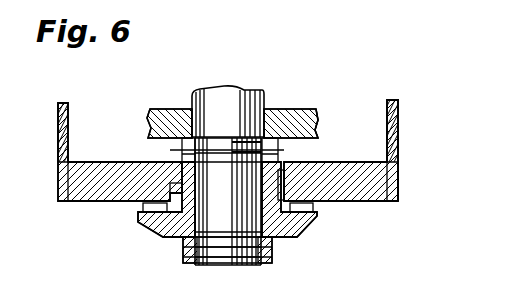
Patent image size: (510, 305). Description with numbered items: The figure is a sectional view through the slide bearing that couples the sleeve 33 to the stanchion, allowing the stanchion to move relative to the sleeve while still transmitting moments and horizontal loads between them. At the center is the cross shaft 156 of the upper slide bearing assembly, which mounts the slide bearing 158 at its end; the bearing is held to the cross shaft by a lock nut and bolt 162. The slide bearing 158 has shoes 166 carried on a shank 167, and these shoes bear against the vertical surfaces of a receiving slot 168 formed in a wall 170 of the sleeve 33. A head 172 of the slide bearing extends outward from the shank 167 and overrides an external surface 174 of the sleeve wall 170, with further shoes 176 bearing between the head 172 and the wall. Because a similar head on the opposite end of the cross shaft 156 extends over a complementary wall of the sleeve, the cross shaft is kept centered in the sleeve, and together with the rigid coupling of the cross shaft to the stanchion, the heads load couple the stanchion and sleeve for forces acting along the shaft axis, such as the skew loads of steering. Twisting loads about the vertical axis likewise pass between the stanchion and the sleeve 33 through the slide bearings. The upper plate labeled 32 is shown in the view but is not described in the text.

The cross shaft 156 is at (201, 93).
The upper plate 32 is at (281, 110).
The shank 167 is at (314, 141).
The receiving slot 168 is at (283, 160).
The shoes 166 is at (183, 162).
The sleeve 33 is at (377, 187).
The wall 170 is at (367, 202).
The shoes 176 is at (139, 224).
The slide bearing 158 is at (296, 233).
The lock nut and bolt 162 is at (266, 265).
The head 172 is at (163, 238).
The external surface 174 is at (98, 203).